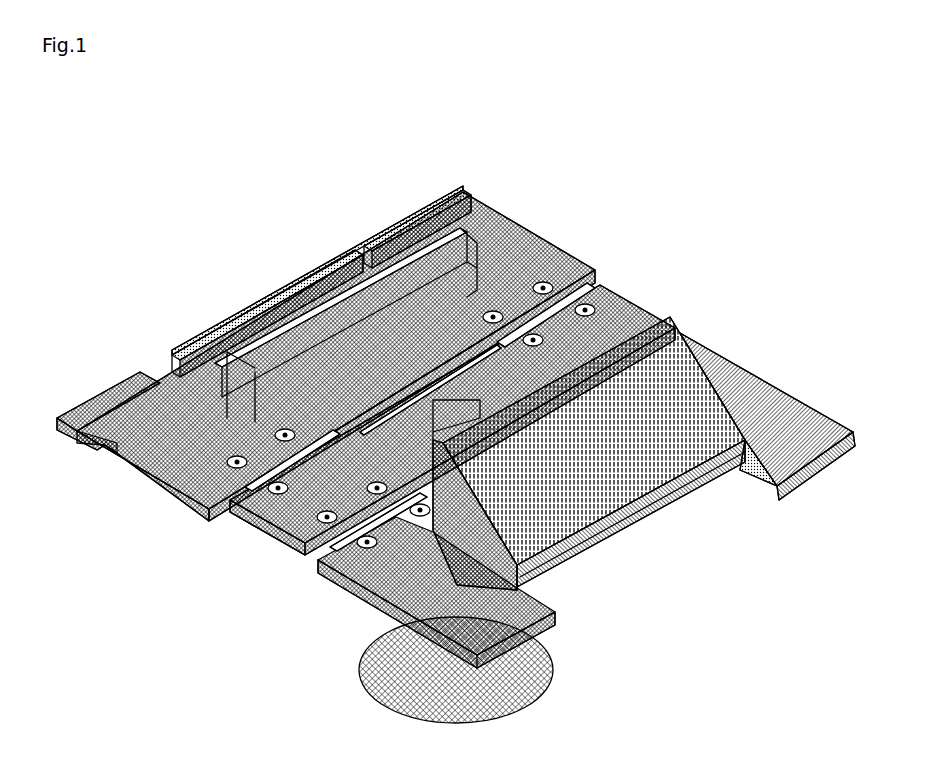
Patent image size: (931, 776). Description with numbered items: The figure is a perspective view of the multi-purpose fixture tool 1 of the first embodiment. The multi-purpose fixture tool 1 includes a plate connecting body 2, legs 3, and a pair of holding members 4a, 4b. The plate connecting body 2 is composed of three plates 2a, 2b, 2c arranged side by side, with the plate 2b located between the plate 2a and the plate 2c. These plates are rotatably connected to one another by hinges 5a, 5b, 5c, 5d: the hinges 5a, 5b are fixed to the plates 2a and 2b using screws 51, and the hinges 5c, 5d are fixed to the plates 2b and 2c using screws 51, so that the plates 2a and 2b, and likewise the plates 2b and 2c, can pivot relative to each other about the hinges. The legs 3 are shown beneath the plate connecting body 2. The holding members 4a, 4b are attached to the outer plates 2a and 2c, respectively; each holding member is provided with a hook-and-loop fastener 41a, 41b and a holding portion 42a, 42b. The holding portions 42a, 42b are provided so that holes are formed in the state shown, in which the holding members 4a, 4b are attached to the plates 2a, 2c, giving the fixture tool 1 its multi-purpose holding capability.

The multi-purpose fixture tool 1 is at (815, 150).
The plate connecting body 2 is at (826, 306).
The plate 2a is at (540, 240).
The plate 2b is at (640, 297).
The plate 2c is at (743, 367).
The legs 3 is at (513, 670).
The holding member 4a is at (130, 457).
The holding member 4b is at (363, 593).
The hinge 5a is at (423, 205).
The hinge 5b is at (222, 502).
The hinge 5c is at (827, 470).
The hinge 5d is at (307, 560).
The hook-and-loop fastener 41a is at (280, 293).
The hook-and-loop fastener 41b is at (650, 527).
The holding portion 42a is at (227, 326).
The holding portion 42b is at (457, 592).
The screws 51 is at (257, 537).